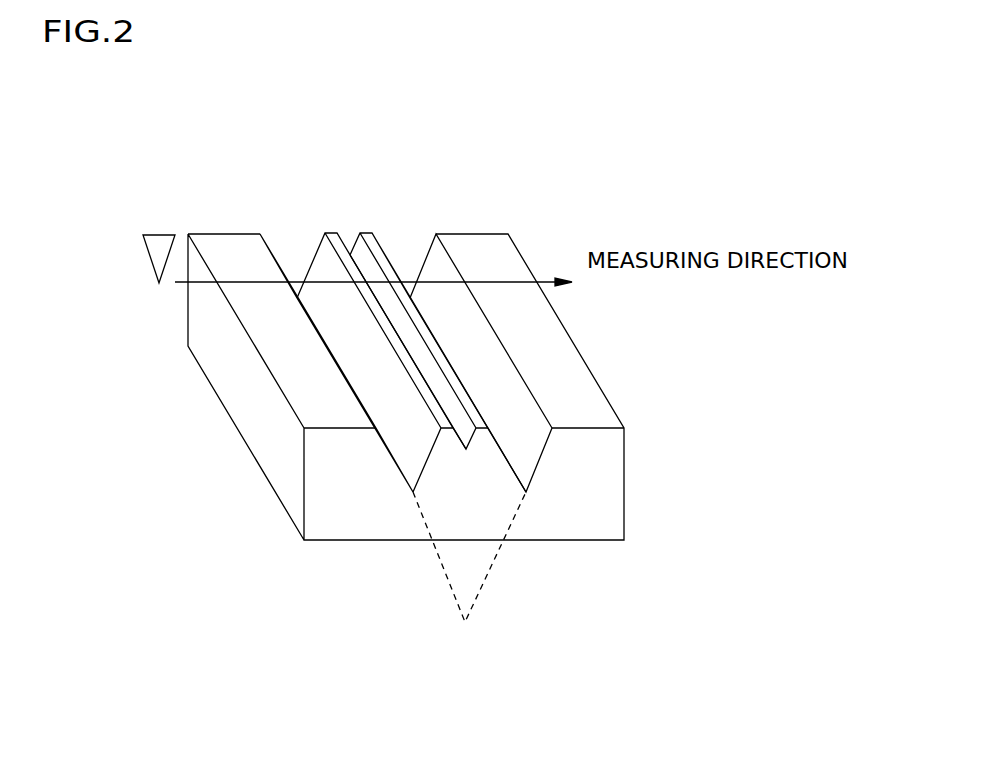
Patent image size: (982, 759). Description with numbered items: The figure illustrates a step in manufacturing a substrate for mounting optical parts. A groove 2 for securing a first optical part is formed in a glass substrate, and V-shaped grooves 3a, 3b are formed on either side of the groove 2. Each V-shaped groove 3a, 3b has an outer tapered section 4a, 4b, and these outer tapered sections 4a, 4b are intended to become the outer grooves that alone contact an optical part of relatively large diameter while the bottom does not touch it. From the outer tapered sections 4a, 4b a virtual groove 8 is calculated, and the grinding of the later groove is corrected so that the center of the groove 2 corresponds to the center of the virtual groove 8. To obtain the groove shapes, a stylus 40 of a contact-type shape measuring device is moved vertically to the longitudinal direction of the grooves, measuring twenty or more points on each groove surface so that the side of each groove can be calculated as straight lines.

The groove for securing a first optical part 2 is at (458, 388).
The V-shaped groove 3a is at (294, 236).
The V-shaped groove 3b is at (396, 225).
The outer tapered section 4a is at (432, 489).
The outer tapered section 4b is at (558, 477).
The virtual groove 8 is at (389, 522).
The stylus 40 is at (155, 248).